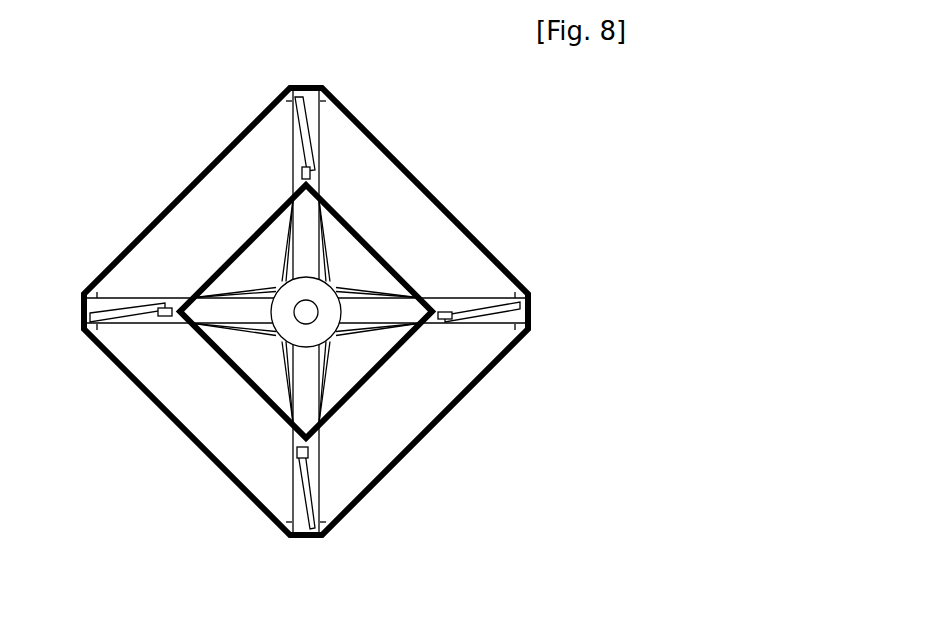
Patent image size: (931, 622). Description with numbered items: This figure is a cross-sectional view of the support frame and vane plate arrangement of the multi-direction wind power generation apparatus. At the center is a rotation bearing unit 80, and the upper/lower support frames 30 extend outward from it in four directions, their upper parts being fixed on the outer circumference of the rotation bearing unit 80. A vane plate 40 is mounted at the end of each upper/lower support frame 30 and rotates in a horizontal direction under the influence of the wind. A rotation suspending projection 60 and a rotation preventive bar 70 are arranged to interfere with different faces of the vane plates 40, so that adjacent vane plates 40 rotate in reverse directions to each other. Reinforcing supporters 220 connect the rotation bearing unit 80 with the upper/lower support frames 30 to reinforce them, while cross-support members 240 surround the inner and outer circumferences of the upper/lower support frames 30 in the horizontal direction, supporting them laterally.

The upper/lower support frame 30 is at (119, 324).
The vane plate 40 is at (307, 133).
The rotation suspending projection 60 is at (322, 532).
The rotation preventive bar 70 is at (303, 172).
The rotation bearing unit 80 is at (285, 297).
The reinforcing supporter 220 is at (355, 330).
The cross-support member 240 is at (355, 225).